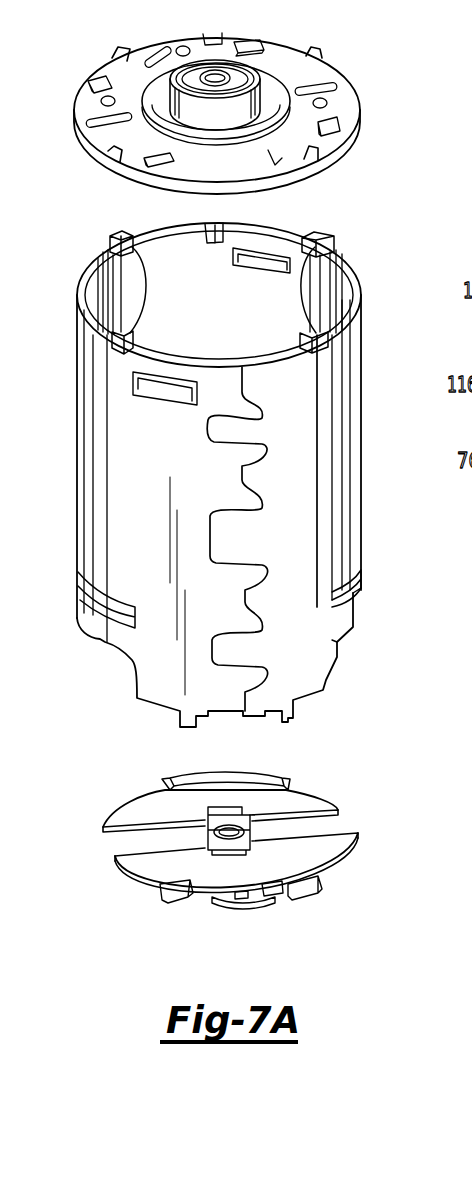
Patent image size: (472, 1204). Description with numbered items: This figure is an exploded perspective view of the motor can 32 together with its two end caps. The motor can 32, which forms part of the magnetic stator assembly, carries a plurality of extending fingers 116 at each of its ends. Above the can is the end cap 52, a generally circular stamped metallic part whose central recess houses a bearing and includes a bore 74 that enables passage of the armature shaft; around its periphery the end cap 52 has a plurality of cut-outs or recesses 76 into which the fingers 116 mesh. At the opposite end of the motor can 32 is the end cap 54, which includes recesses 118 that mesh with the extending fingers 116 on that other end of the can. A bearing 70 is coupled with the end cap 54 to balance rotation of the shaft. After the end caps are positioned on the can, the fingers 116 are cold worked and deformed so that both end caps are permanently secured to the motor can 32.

The end cap 52 is at (231, 106).
The recesses 76 is at (120, 57).
The bore 74 is at (222, 70).
The motor can 32 is at (260, 467).
The extending fingers 116 is at (223, 290).
The recesses 118 is at (224, 773).
The bearing 70 is at (205, 810).
The end cap 54 is at (313, 867).